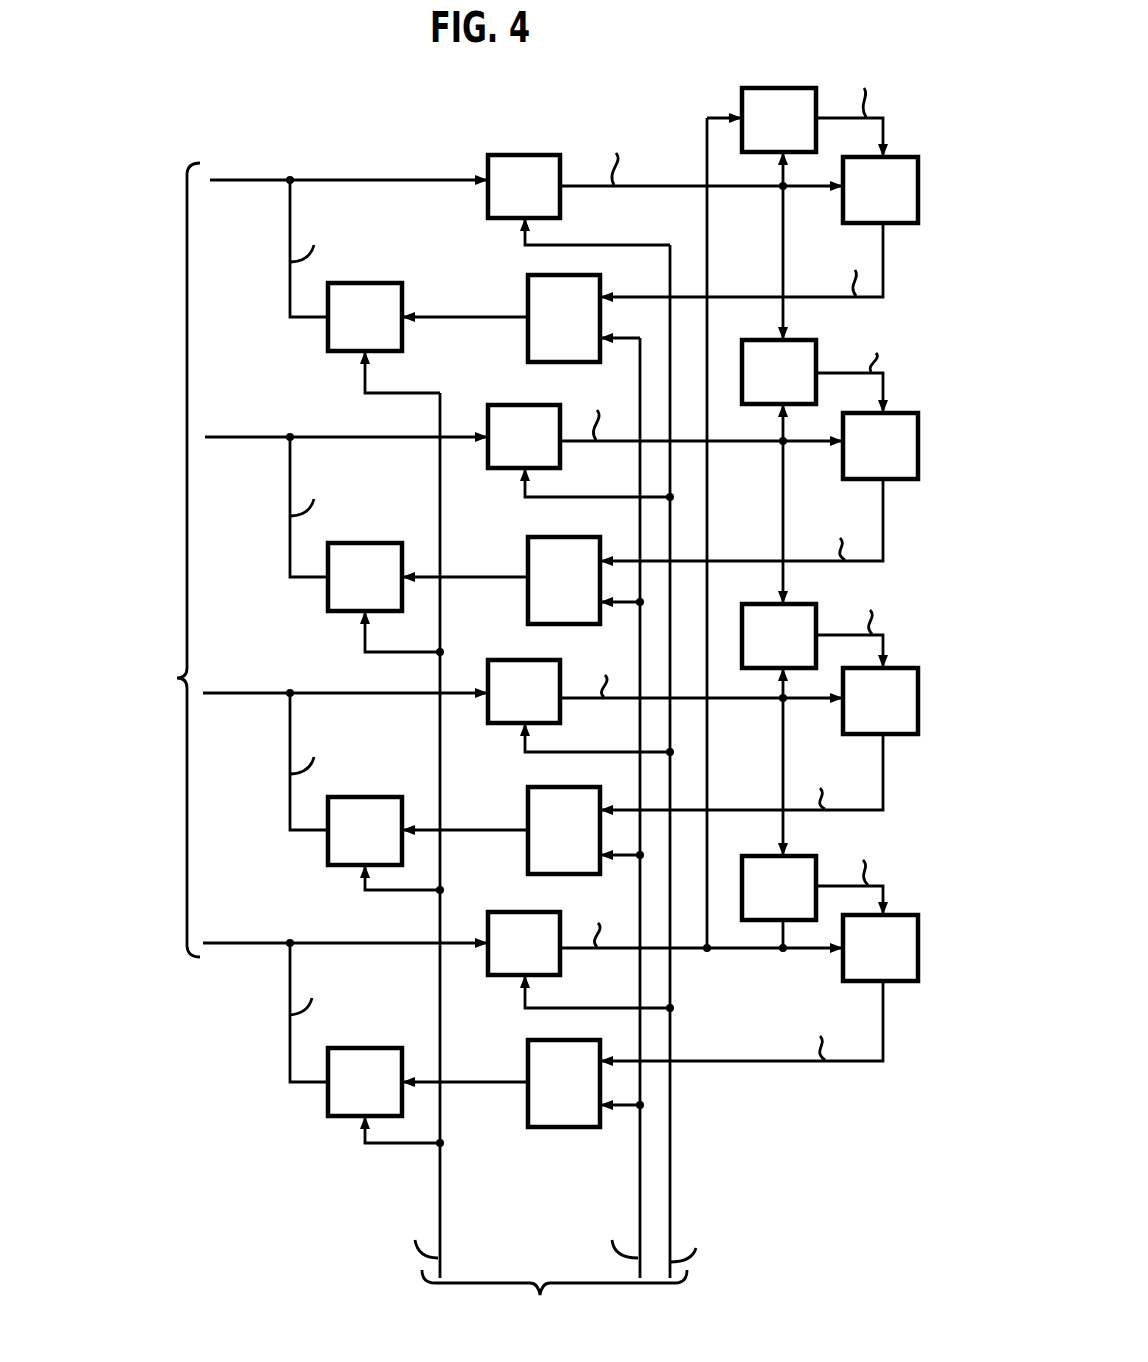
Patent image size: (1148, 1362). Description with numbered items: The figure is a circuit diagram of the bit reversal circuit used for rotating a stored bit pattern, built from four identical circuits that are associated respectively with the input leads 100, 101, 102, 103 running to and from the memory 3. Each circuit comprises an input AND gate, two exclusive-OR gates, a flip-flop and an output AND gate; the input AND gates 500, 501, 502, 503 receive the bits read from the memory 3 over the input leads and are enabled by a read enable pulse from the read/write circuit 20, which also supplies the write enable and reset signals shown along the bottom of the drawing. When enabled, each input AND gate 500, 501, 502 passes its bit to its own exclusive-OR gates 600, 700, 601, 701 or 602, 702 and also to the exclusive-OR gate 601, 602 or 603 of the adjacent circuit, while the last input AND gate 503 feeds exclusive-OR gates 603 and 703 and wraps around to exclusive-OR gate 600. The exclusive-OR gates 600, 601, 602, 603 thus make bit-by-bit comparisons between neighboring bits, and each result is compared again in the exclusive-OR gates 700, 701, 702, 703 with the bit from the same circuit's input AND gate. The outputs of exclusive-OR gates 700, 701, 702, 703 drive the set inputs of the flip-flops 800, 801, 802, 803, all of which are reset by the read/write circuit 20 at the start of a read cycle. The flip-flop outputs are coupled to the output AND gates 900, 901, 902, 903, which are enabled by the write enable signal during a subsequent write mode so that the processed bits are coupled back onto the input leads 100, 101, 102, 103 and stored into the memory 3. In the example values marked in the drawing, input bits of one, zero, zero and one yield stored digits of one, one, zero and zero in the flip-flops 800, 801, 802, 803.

The memory 3 is at (132, 560).
The read/write circuit 20 is at (557, 1267).
The input lead 100 is at (218, 180).
The input lead 101 is at (215, 437).
The input lead 102 is at (215, 693).
The input lead 103 is at (213, 943).
The input AND gate 500 is at (512, 155).
The input AND gate 501 is at (525, 405).
The input AND gate 502 is at (535, 660).
The input AND gate 503 is at (535, 912).
The exclusive-OR gate 600 is at (765, 88).
The exclusive-OR gate 601 is at (818, 362).
The exclusive-OR gate 602 is at (793, 604).
The exclusive-OR gate 603 is at (787, 858).
The exclusive-OR gate 700 is at (891, 158).
The exclusive-OR gate 701 is at (891, 414).
The exclusive-OR gate 702 is at (892, 668).
The exclusive-OR gate 703 is at (889, 915).
The flip-flop 800 is at (586, 275).
The flip-flop 801 is at (570, 537).
The flip-flop 802 is at (562, 787).
The flip-flop 803 is at (572, 1040).
The output AND gate 900 is at (368, 283).
The output AND gate 901 is at (357, 543).
The output AND gate 902 is at (360, 797).
The output AND gate 903 is at (355, 1048).